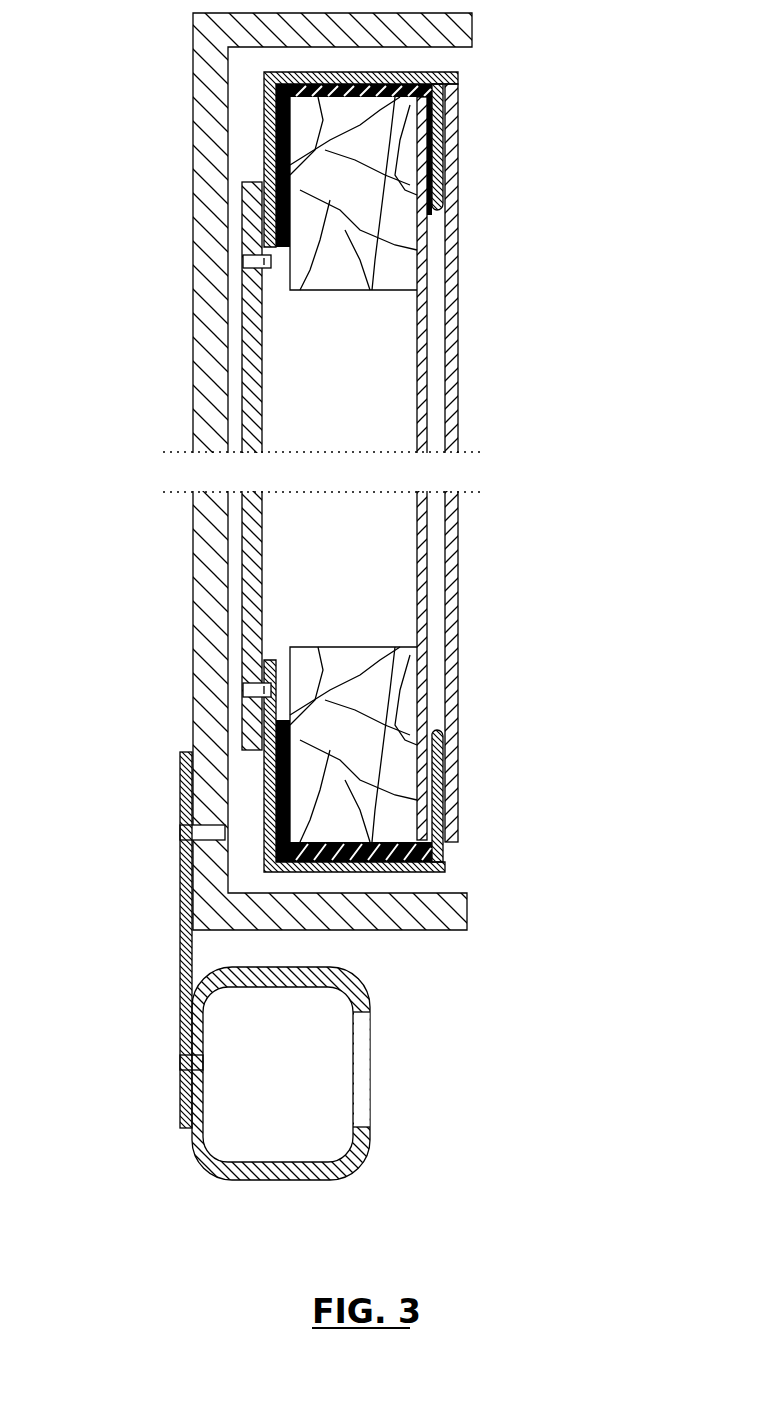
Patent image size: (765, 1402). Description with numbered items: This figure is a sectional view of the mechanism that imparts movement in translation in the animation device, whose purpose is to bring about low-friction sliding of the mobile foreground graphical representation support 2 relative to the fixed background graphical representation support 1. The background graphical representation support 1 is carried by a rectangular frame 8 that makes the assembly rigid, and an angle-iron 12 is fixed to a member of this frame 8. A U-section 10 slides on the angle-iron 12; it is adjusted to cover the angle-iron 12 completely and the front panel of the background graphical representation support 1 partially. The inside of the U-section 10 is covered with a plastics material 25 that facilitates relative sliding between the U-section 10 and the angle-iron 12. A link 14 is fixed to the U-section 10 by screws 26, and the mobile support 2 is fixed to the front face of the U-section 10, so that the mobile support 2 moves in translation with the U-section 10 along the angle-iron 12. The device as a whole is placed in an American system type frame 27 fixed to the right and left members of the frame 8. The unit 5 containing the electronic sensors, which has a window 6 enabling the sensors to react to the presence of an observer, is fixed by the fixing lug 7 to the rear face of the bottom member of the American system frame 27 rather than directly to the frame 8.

The background graphical representation support 1 is at (428, 359).
The mobile foreground graphical representation support 2 is at (455, 562).
The unit 5 is at (345, 1172).
The window 6 is at (365, 1075).
The fixing lug 7 is at (181, 913).
The frame 8 is at (358, 752).
The U-section 10 is at (265, 80).
The angle-iron 12 is at (293, 229).
The link 14 is at (247, 597).
The plastics material 25 is at (277, 167).
The screws 26 is at (243, 259).
The American system frame 27 is at (458, 28).